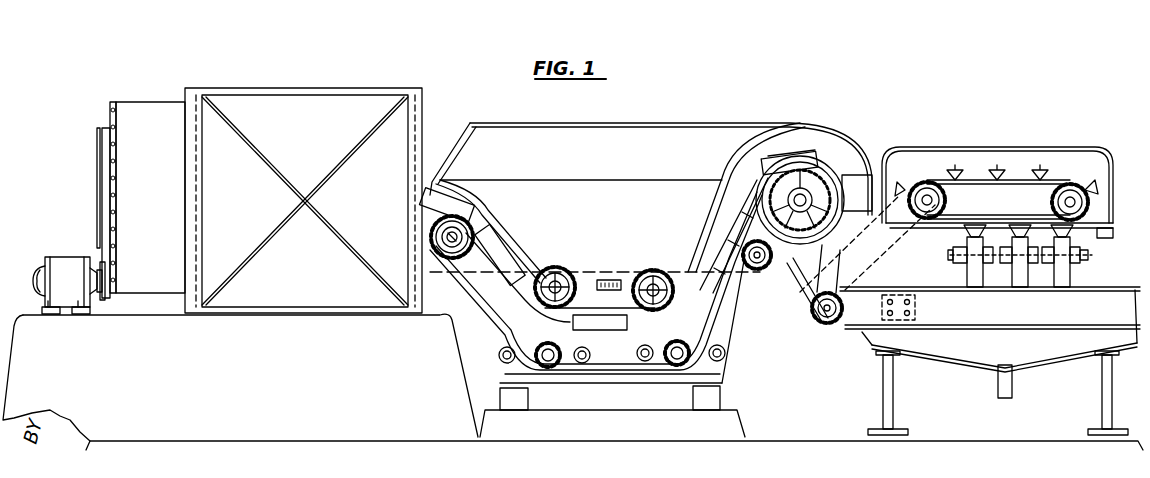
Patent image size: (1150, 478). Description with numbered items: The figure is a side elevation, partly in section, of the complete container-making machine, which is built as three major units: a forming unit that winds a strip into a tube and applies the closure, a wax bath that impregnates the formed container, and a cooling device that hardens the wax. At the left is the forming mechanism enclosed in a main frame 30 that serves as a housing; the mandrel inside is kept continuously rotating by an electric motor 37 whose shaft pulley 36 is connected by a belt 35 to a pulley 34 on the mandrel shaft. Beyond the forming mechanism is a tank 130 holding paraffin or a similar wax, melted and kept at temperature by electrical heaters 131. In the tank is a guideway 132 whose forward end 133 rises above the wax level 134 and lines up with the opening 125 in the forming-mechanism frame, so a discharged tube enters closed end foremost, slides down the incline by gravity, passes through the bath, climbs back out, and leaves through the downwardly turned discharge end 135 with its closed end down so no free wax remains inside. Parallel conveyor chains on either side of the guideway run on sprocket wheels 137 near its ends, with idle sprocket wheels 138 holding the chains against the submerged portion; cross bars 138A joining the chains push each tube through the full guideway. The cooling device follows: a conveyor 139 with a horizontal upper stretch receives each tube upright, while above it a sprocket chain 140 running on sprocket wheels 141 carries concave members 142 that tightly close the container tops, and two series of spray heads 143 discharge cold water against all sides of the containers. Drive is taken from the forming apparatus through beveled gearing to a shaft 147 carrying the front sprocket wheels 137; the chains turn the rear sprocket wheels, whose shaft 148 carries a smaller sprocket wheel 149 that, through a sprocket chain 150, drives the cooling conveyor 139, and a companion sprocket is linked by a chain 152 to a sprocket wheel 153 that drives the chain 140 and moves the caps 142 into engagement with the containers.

The main frame 30 is at (404, 88).
The pulley 34 is at (97, 156).
The belt 35 is at (99, 249).
The pulley 36 is at (108, 290).
The electric motor 37 is at (77, 258).
The opening 125 is at (418, 197).
The tank 130 is at (500, 353).
The heaters 131 is at (503, 360).
The guideway 132 is at (513, 293).
The forward end of guideway 133 is at (474, 198).
The level of the wax 134 is at (601, 271).
The discharge end 135 is at (858, 198).
The sprocket wheels 137 is at (470, 286).
The idle sprocket wheels 138 is at (557, 266).
The cross bars 138A is at (436, 229).
The conveyor 139 is at (880, 331).
The sprocket chain 140 is at (1020, 179).
The sprocket wheels 141 is at (1113, 139).
The concave members 142 is at (996, 169).
The spray heads 143 is at (1001, 268).
The shaft 147 is at (428, 254).
The shaft 148 is at (829, 163).
The sprocket wheel 149 is at (789, 216).
The sprocket chain 150 is at (800, 290).
The chain 152 is at (911, 270).
The sprocket wheel 153 is at (949, 203).